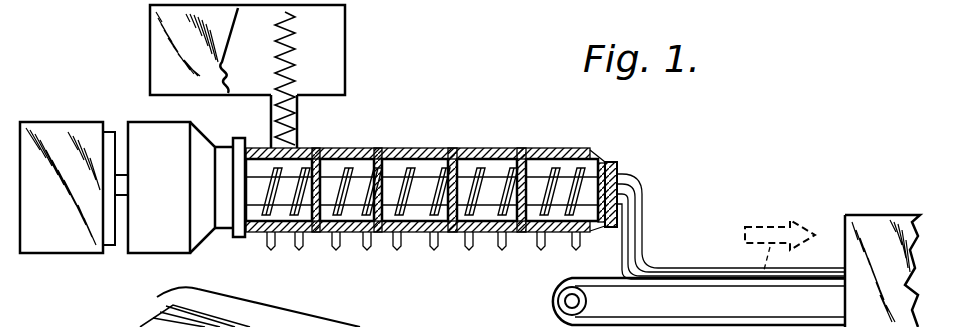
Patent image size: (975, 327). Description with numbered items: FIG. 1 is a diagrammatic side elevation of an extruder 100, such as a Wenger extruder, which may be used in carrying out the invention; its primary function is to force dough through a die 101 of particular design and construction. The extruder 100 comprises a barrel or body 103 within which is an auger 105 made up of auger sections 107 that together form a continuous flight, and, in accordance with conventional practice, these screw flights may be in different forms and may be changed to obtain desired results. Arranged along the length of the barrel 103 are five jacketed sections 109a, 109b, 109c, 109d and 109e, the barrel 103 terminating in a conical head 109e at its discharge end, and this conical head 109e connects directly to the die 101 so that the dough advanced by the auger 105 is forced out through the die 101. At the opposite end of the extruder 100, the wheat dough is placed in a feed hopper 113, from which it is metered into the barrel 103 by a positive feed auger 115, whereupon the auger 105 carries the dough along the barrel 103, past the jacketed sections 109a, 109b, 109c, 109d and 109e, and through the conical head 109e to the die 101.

The extruder 100 is at (362, 132).
The die 101 is at (620, 172).
The barrel 103 is at (425, 167).
The auger 105 is at (575, 150).
The auger sections 107 is at (413, 150).
The jacketed section 109a is at (283, 240).
The jacketed section 109b is at (352, 240).
The jacketed section 109c is at (412, 240).
The jacketed section 109d is at (486, 240).
The conical head 109e is at (550, 240).
The feed hopper 113 is at (150, 28).
The positive feed auger 115 is at (297, 68).